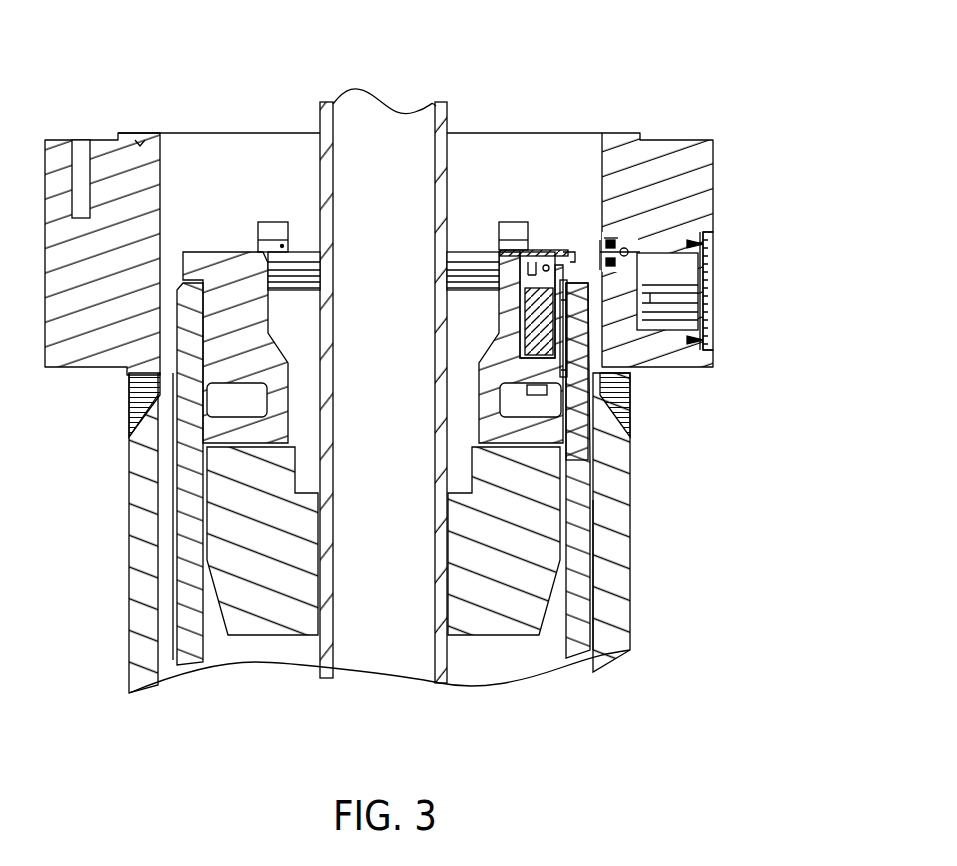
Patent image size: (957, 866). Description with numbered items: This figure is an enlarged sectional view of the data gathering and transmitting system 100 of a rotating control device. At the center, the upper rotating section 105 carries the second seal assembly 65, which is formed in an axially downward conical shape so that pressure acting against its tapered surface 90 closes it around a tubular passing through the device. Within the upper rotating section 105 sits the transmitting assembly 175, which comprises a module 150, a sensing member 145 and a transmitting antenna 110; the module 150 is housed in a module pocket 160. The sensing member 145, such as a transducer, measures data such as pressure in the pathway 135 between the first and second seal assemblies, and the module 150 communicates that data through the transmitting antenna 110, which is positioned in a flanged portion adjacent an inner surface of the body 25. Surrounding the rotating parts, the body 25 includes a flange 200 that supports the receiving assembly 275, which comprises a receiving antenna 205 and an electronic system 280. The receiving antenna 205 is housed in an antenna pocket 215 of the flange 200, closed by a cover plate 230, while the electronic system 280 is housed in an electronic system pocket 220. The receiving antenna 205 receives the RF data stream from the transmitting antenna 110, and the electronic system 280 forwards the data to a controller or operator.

The body 25 is at (608, 535).
The second seal assembly 65 is at (514, 600).
The tapered surface 90 is at (218, 563).
The data gathering and transmitting system 100 is at (818, 222).
The upper rotating section 105 is at (577, 617).
The transmitting antenna 110 is at (570, 250).
The pathway 135 is at (607, 573).
The sensing member 145 is at (590, 493).
The module 150 is at (600, 420).
The module pocket 160 is at (500, 247).
The transmitting assembly 175 is at (555, 225).
The flange 200 is at (68, 248).
The receiving antenna 205 is at (610, 267).
The antenna pocket 215 is at (593, 250).
The electronic system pocket 220 is at (710, 320).
The cover plate 230 is at (627, 247).
The receiving assembly 275 is at (736, 348).
The electronic system 280 is at (668, 303).